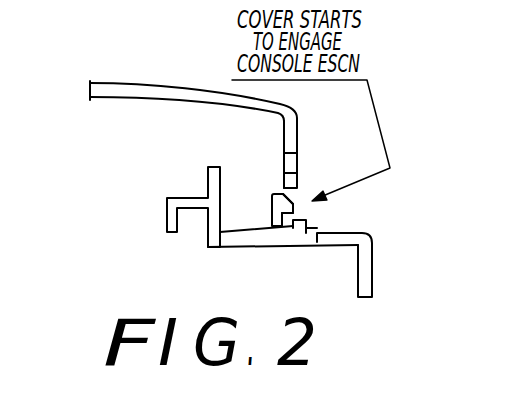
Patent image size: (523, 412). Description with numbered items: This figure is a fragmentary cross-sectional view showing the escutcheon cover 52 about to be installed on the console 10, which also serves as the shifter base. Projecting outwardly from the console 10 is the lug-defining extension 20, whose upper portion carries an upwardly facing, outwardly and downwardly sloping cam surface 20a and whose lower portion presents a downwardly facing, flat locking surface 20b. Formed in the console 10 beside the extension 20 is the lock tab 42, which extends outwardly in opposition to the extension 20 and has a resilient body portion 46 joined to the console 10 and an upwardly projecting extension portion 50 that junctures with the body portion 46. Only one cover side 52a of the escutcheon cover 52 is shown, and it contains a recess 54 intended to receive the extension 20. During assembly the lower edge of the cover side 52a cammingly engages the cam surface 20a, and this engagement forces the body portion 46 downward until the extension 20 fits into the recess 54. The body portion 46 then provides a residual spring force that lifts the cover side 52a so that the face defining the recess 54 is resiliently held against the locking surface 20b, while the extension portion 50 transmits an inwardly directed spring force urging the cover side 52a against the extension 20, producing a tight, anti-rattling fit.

The console 10 is at (373, 268).
The extension 20 is at (273, 196).
The cam surface 20a is at (295, 196).
The locking surface 20b is at (303, 213).
The lock tab 42 is at (296, 236).
The body portion 46 is at (257, 233).
The extension portion 50 is at (310, 231).
The escutcheon cover 52 is at (133, 83).
The cover side 52a is at (283, 122).
The recess 54 is at (297, 158).